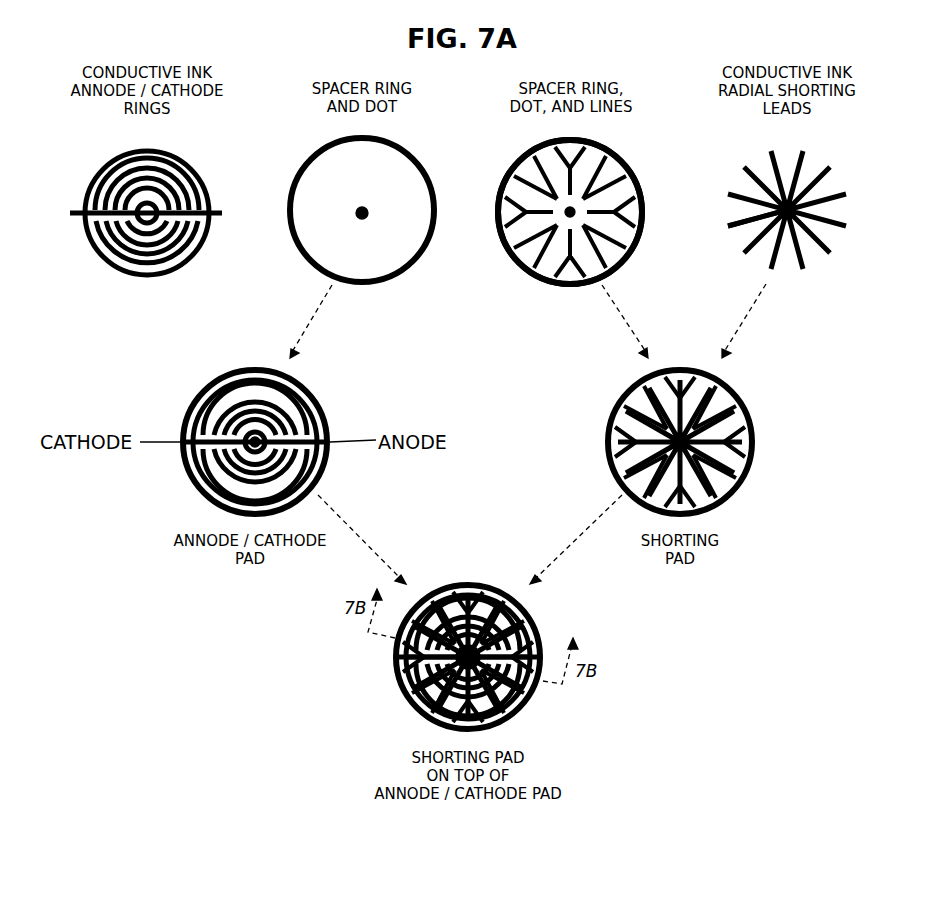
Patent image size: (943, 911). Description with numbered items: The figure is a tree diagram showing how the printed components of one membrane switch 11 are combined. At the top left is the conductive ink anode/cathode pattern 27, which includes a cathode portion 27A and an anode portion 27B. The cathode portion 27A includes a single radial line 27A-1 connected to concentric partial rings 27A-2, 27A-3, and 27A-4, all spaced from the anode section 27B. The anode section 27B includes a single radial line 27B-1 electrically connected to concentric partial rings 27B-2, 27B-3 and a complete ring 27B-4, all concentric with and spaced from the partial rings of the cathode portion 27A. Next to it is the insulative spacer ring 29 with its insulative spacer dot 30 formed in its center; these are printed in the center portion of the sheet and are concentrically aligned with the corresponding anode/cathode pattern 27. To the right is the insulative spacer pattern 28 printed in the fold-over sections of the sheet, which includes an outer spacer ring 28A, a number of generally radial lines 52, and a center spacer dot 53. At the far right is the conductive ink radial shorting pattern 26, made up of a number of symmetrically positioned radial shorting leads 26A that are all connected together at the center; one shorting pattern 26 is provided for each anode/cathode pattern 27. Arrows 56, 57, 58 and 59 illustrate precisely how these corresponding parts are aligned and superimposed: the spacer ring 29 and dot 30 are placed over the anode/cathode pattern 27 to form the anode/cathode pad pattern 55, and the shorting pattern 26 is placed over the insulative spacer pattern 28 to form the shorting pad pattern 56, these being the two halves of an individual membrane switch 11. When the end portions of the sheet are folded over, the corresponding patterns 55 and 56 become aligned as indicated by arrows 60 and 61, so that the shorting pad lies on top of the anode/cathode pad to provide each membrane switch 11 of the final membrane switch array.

The membrane switch 11 is at (391, 715).
The conductive ink radial shorting pattern 26 is at (805, 268).
The radial shorting lead 26A is at (745, 226).
The anode/cathode pattern 27 is at (155, 220).
The cathode portion 27A is at (73, 212).
The radial line 27A-1 is at (86, 226).
The concentric partial ring 27A-2 is at (105, 178).
The concentric partial ring 27A-3 is at (100, 257).
The concentric partial ring 27A-4 is at (147, 188).
The anode portion 27B is at (221, 212).
The radial line 27B-1 is at (216, 216).
The concentric partial ring 27B-2 is at (196, 246).
The concentric partial ring 27B-3 is at (147, 276).
The complete ring 27B-4 is at (190, 178).
The insulative spacer pattern 28 is at (626, 161).
The outer spacer ring 28A is at (510, 170).
The insulative spacer ring 29 is at (406, 276).
The insulative spacer dot 30 is at (360, 206).
The radial line 52 is at (632, 196).
The center spacer dot 53 is at (568, 214).
The anode/cathode pad pattern 55 is at (187, 406).
The shorting pad pattern 56 is at (757, 421).
The arrow 57 is at (323, 321).
The arrow 58 is at (609, 321).
The arrow 59 is at (751, 321).
The arrow 60 is at (362, 539).
The arrow 61 is at (573, 539).